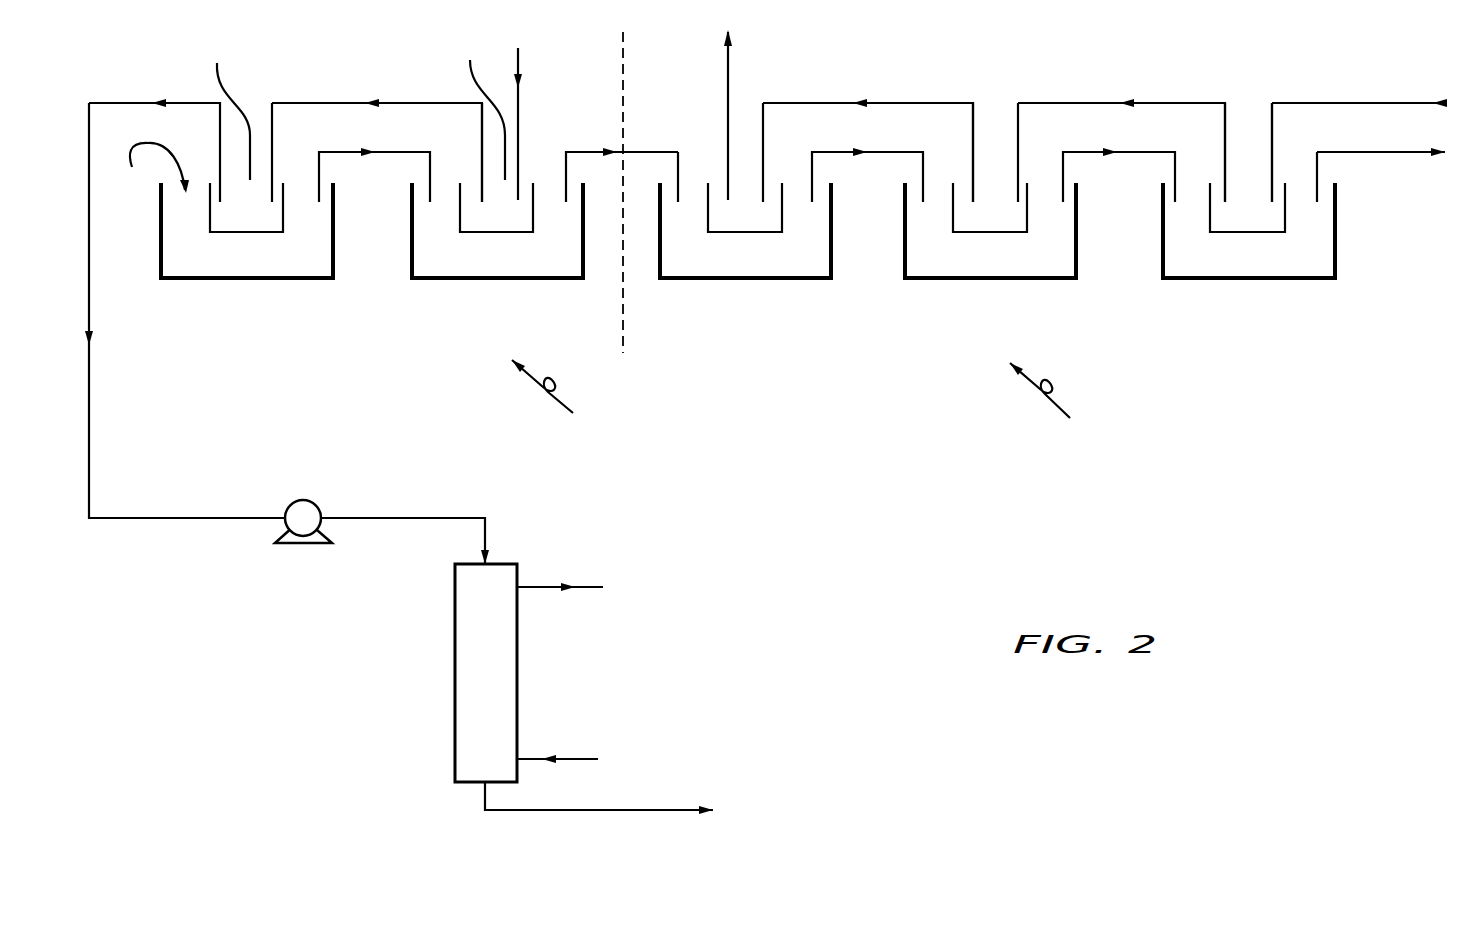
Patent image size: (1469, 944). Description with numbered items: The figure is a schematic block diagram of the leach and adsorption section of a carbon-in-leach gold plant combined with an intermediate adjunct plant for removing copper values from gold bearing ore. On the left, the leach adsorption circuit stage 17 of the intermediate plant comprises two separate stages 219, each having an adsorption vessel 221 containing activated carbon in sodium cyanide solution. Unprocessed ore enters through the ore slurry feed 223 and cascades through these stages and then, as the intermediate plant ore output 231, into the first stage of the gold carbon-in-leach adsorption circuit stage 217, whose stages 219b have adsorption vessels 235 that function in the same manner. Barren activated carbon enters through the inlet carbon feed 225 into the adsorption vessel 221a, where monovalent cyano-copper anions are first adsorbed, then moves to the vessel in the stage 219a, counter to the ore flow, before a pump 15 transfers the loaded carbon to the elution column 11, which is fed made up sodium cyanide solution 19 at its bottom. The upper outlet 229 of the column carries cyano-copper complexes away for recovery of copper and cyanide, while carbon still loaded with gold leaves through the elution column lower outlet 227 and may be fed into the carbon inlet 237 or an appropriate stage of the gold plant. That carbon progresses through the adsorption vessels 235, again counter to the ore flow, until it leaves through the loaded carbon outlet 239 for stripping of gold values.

The elution column 11 is at (517, 654).
The pump 15 is at (303, 500).
The leach adsorption circuit stage 17 is at (553, 402).
The made up sodium cyanide solution 19 is at (575, 759).
The carbon-in-leach adsorption circuit stage 217 is at (1056, 406).
The stage 219 is at (478, 283).
The stage 219a is at (243, 283).
The stage 219b is at (725, 283).
The adsorption vessel 221 is at (226, 108).
The adsorption vessel 221a is at (477, 107).
The ore slurry feed 223 is at (150, 170).
The inlet carbon feed 225 is at (518, 62).
The elution column lower outlet 227 is at (580, 812).
The upper outlet 229 is at (590, 587).
The intermediate plant ore output 231 is at (650, 152).
The adsorption vessel 235 is at (765, 234).
The carbon inlet 237 is at (1315, 103).
The loaded carbon outlet 239 is at (728, 62).